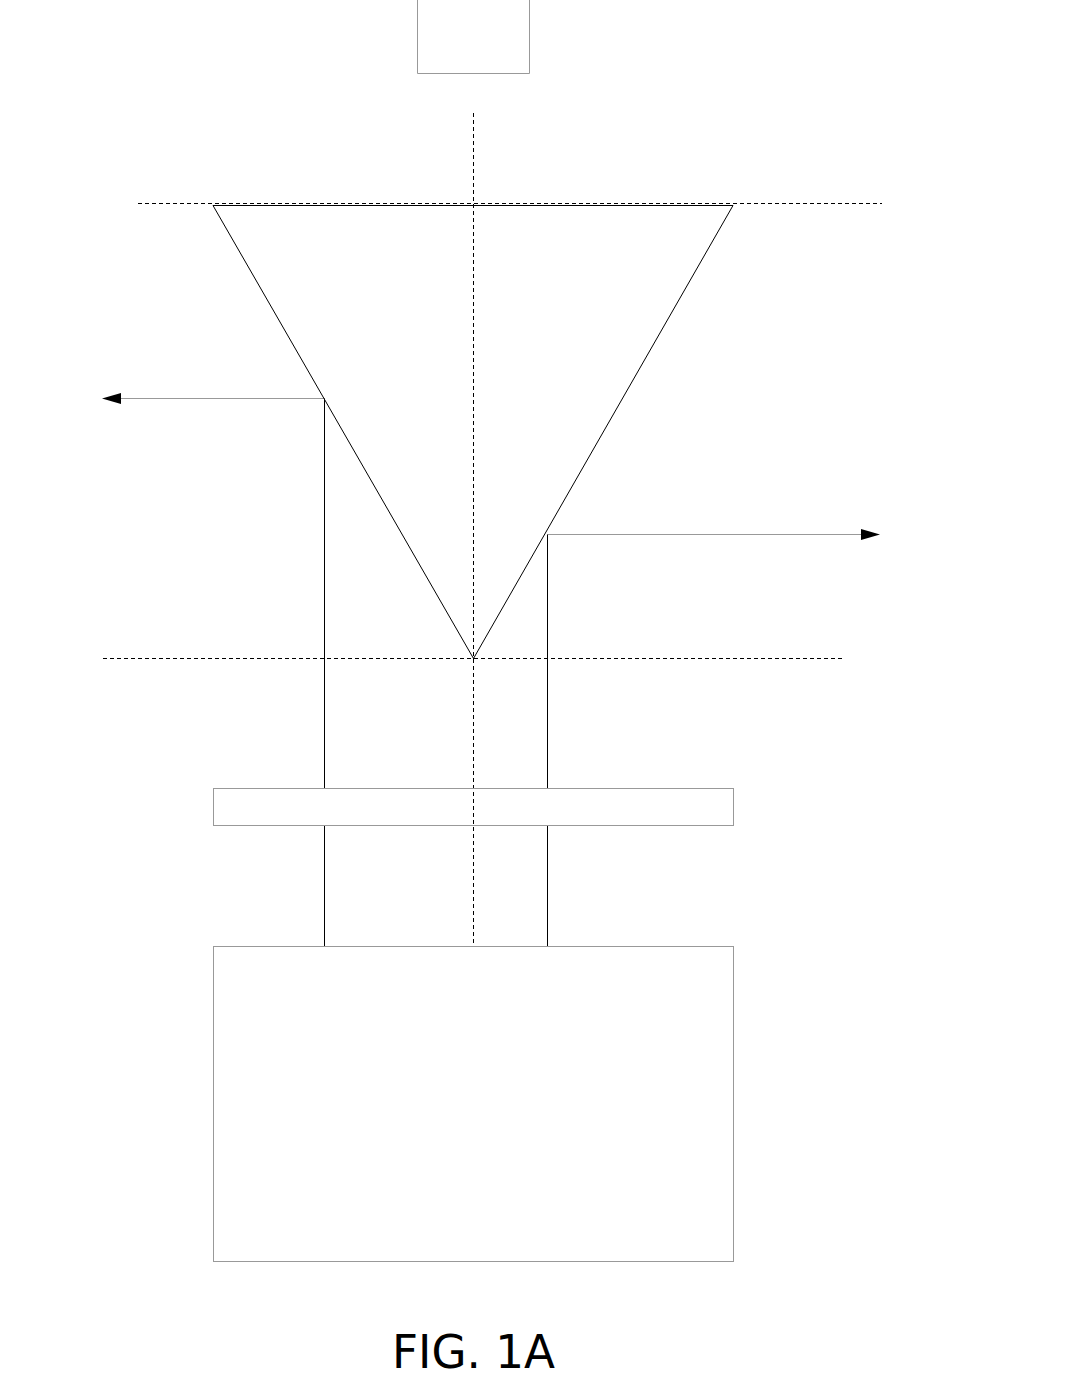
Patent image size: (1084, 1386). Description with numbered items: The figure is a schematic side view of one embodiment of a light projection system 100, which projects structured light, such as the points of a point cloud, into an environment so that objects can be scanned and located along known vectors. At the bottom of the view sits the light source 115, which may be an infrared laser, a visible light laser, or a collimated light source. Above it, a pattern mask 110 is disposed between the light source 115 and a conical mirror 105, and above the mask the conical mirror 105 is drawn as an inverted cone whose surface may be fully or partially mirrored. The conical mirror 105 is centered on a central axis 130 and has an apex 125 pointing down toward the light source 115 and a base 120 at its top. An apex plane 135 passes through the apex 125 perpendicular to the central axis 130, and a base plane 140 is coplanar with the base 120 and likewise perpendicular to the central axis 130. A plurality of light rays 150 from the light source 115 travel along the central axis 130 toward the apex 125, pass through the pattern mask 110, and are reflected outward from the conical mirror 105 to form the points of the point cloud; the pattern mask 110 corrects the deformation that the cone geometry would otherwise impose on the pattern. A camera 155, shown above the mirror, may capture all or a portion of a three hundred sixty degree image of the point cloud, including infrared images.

The light projection system 100 is at (96, 89).
The conical mirror 105 is at (493, 382).
The pattern mask 110 is at (493, 818).
The light source 115 is at (493, 1132).
The base 120 is at (550, 203).
The apex 125 is at (474, 659).
The central axis 130 is at (473, 180).
The apex plane 135 is at (697, 658).
The base plane 140 is at (828, 203).
The light rays 150 is at (324, 733).
The camera 155 is at (493, 48).